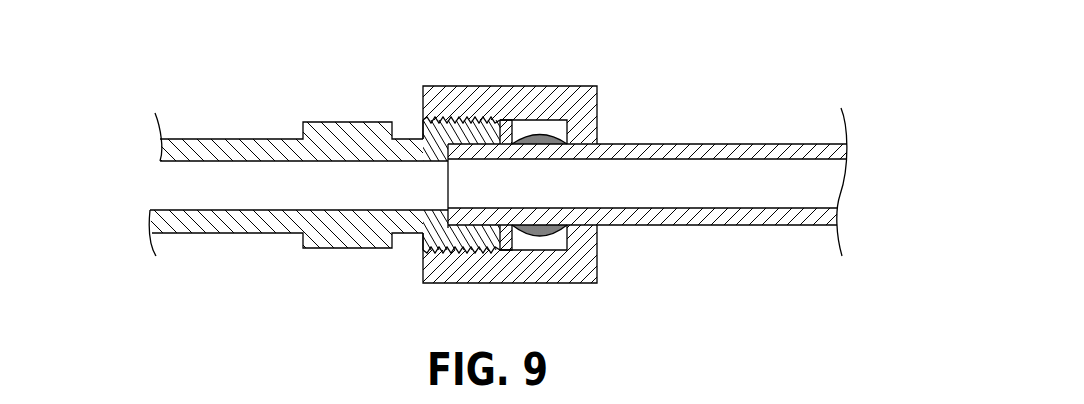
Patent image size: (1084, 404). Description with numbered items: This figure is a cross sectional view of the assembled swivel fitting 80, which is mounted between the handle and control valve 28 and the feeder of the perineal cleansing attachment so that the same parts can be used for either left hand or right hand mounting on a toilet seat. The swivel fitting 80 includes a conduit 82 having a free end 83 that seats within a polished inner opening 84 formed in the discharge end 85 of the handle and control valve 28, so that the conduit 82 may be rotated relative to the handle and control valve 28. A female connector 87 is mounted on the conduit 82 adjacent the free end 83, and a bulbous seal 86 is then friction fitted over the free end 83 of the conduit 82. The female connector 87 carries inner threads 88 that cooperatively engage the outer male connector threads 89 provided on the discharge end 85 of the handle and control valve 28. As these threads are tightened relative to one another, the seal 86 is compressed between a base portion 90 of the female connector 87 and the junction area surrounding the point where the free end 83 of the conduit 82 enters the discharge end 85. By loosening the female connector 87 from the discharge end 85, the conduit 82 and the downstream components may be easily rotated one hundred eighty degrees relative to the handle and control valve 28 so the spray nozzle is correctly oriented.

The handle and control valve 28 is at (208, 139).
The swivel fitting 80 is at (612, 100).
The conduit 82 is at (669, 144).
The free end 83 is at (448, 190).
The polished inner opening 84 is at (489, 148).
The discharge end 85 is at (447, 132).
The bulbous seal 86 is at (546, 241).
The female connector 87 is at (568, 278).
The inner threads 88 is at (488, 243).
The outer male connector threads 89 is at (478, 118).
The base portion 90 is at (560, 137).